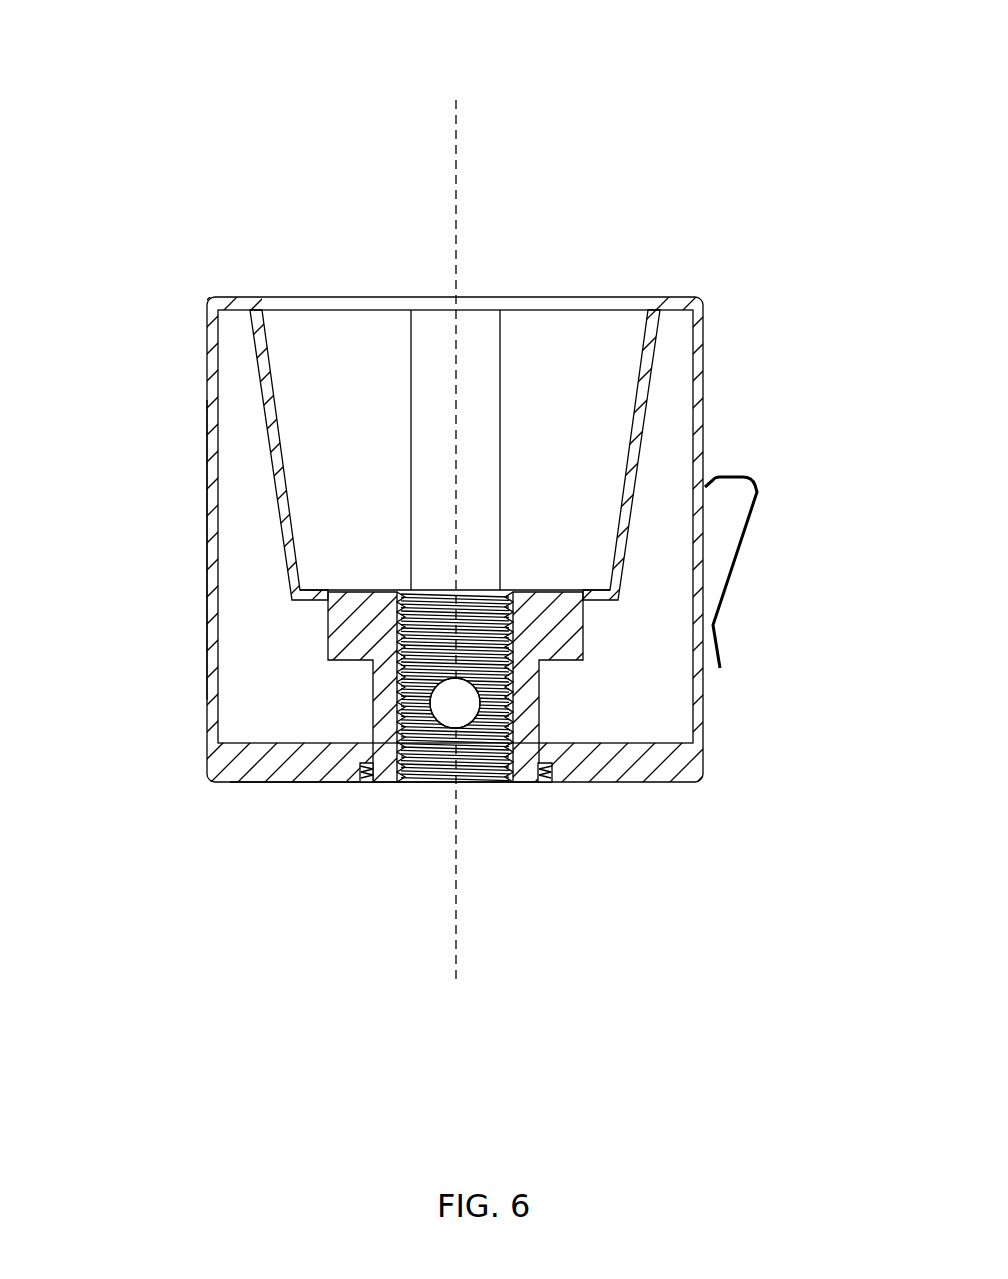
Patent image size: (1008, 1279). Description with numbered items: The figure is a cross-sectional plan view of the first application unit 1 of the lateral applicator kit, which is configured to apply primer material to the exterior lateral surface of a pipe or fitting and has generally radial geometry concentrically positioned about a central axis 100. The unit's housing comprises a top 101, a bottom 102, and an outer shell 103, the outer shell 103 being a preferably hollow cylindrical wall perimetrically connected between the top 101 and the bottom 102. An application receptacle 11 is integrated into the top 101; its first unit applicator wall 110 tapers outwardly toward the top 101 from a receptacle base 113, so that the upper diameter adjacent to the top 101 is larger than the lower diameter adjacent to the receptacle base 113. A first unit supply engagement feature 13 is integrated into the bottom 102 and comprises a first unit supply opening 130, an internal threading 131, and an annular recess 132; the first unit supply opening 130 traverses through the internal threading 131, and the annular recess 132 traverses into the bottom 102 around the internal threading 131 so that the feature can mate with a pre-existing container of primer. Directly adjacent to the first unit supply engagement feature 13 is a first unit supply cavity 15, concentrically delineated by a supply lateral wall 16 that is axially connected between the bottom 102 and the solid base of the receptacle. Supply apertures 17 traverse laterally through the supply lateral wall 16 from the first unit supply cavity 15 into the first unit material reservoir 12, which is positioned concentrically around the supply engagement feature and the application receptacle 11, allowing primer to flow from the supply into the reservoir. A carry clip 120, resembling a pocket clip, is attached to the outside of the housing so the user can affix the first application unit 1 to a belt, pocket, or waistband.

The first application unit 1 is at (504, 433).
The central axis 100 is at (456, 123).
The top 101 is at (230, 276).
The bottom 102 is at (305, 812).
The outer shell 103 is at (212, 643).
The application receptacle 11 is at (552, 348).
The first unit applicator wall 110 is at (363, 324).
The receptacle base 113 is at (603, 627).
The first unit material reservoir 12 is at (248, 657).
The first unit supply engagement feature 13 is at (496, 755).
The first unit supply opening 130 is at (444, 790).
The internal threading 131 is at (482, 776).
The annular recess 132 is at (548, 784).
The first unit supply cavity 15 is at (448, 708).
The supply apertures 17 is at (395, 703).
The supply lateral wall 16 is at (527, 707).
The carry clip 120 is at (757, 483).